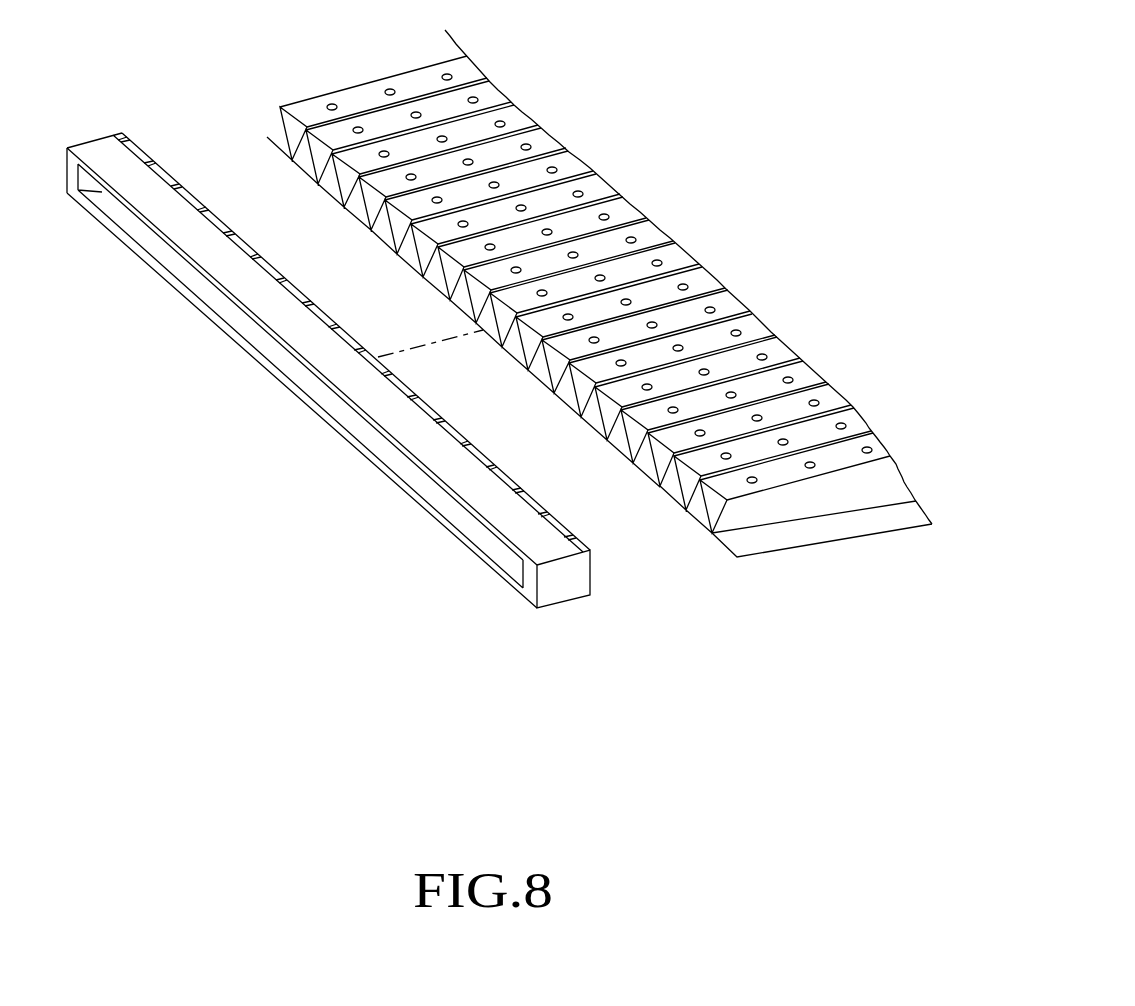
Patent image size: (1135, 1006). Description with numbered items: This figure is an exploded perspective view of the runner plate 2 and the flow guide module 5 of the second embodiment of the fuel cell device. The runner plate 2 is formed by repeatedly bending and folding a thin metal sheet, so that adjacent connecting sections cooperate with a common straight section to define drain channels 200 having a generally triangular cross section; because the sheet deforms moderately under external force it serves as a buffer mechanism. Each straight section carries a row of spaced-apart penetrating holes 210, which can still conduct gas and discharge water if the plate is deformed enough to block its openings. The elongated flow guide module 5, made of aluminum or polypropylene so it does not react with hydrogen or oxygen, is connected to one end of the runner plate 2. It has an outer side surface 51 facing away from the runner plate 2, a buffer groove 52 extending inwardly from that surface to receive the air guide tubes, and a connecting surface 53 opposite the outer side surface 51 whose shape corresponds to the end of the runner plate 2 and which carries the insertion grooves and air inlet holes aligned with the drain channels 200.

The runner plate 2 is at (599, 291).
The drain channel 200 is at (408, 247).
The penetrating hole 210 is at (662, 262).
The flow guide module 5 is at (355, 370).
The outer side surface 51 is at (316, 410).
The buffer groove 52 is at (244, 329).
The connecting surface 53 is at (567, 523).